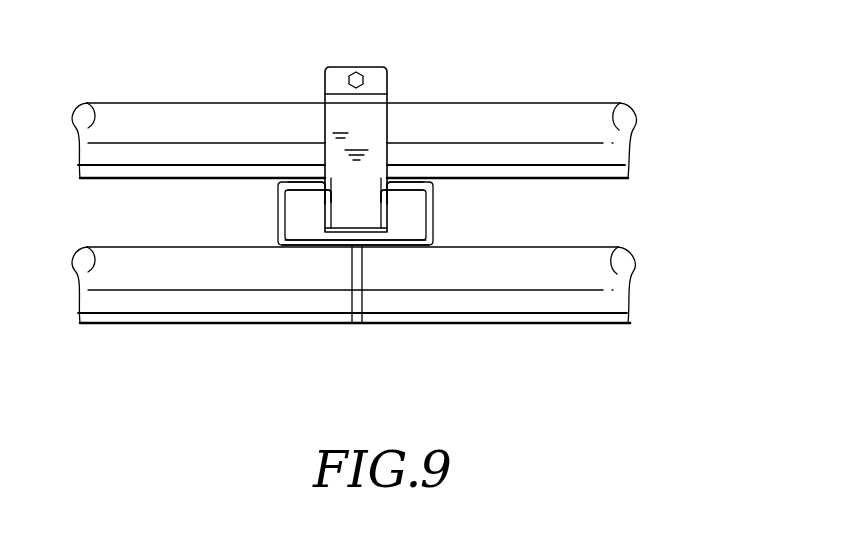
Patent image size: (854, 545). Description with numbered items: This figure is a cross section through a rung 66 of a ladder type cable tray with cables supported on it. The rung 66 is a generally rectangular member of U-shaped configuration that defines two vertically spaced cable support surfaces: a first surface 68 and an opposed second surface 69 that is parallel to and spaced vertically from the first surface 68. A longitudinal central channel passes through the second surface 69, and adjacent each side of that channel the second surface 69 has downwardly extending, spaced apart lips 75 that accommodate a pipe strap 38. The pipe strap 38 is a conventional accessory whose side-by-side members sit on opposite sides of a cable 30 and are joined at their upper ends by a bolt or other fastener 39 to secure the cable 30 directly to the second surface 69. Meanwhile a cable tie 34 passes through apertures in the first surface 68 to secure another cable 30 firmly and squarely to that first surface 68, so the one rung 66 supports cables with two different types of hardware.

The cable 30 is at (205, 120).
The cable tie 34 is at (352, 305).
The pipe strap 38 is at (358, 115).
The bolt or other fastener 39 is at (351, 70).
The rung 66 is at (435, 223).
The first surface 68 is at (400, 247).
The second surface 69 is at (407, 178).
The lips 75 is at (322, 190).